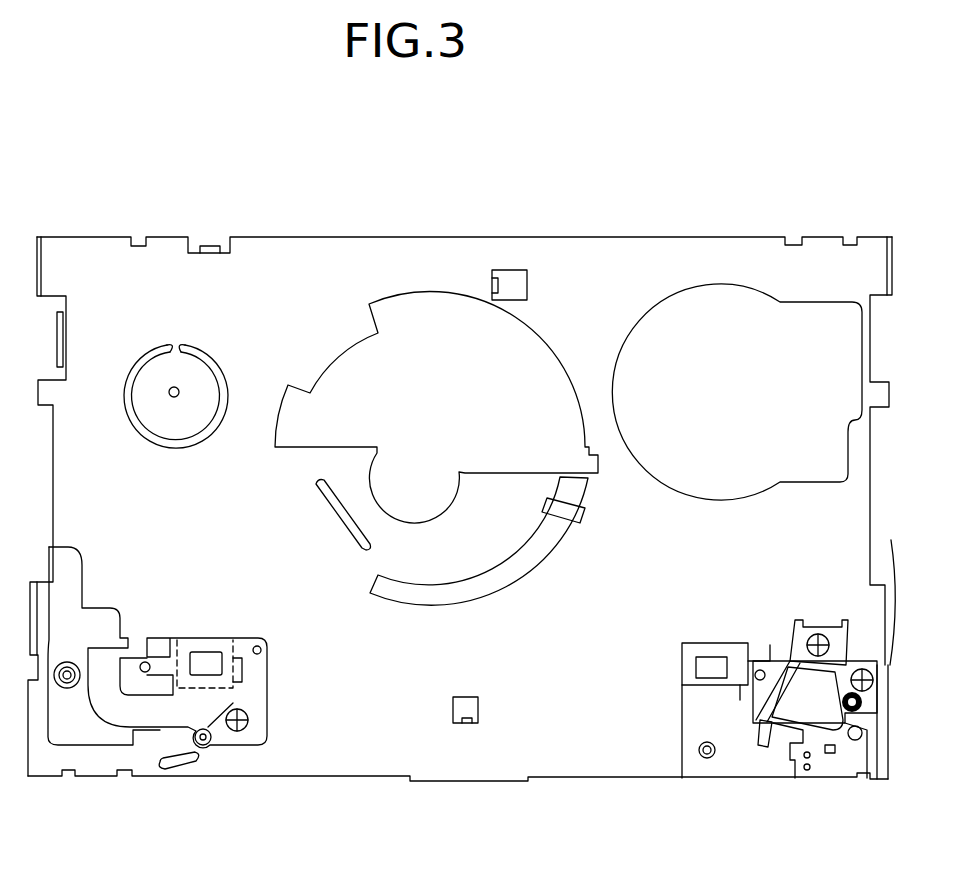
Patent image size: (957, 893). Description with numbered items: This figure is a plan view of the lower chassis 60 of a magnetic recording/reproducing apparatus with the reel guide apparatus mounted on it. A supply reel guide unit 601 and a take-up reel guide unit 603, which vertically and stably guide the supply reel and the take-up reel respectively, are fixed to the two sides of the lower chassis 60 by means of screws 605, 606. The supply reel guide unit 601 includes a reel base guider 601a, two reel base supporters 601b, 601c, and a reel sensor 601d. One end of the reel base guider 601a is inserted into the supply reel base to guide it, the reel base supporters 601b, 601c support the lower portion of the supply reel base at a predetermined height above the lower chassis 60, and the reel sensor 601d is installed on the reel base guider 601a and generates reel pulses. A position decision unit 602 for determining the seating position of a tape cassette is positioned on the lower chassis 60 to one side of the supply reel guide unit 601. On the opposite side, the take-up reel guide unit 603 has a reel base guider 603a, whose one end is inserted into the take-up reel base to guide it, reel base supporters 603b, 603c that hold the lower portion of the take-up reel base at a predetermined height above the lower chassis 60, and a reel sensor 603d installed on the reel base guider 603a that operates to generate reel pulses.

The lower chassis 60 is at (470, 781).
The supply reel guide unit 601 is at (126, 619).
The reel base guider 601a is at (206, 745).
The reel base supporter 601b is at (142, 672).
The reel base supporter 601c is at (262, 655).
The reel sensor 601d is at (206, 676).
The position decision unit 602 is at (72, 688).
The take-up reel guide unit 603 is at (753, 644).
The reel base guider 603a is at (706, 759).
The reel base supporter 603b is at (758, 681).
The reel base supporter 603c is at (856, 712).
The reel sensor 603d is at (697, 670).
The screw 605 is at (246, 728).
The screw 606 is at (827, 633).